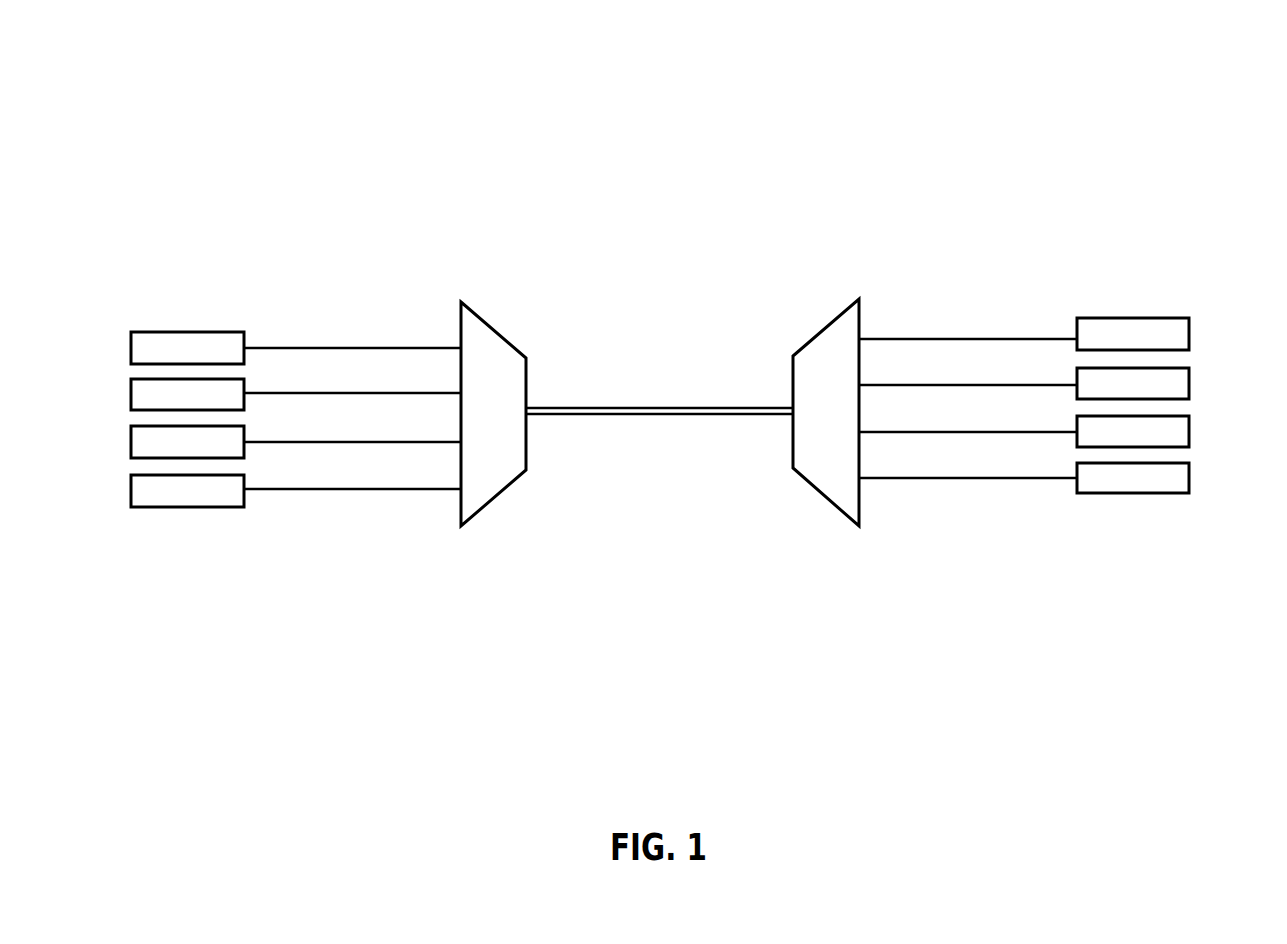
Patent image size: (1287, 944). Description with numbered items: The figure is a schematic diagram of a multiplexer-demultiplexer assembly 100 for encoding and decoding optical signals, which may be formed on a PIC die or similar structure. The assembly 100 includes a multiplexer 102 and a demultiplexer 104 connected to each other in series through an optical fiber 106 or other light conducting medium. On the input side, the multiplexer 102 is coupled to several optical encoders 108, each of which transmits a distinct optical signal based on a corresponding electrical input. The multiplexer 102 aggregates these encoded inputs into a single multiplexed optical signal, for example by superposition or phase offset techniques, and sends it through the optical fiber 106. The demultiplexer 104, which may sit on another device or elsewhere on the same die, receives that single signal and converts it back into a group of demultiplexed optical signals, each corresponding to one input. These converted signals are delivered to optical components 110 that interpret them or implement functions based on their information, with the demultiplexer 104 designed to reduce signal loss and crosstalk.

The multiplexer-demultiplexer assembly 100 is at (709, 134).
The multiplexer 102 is at (499, 332).
The demultiplexer 104 is at (845, 307).
The optical fiber 106 is at (658, 413).
The optical encoders 108 is at (131, 346).
The optical components 110 is at (1189, 327).